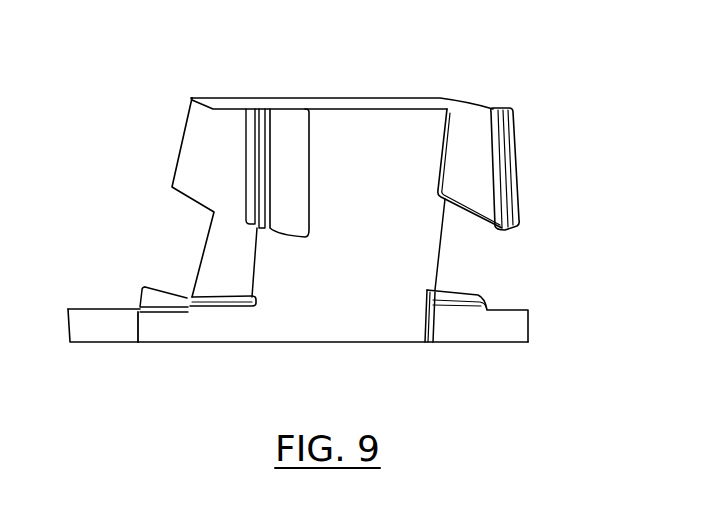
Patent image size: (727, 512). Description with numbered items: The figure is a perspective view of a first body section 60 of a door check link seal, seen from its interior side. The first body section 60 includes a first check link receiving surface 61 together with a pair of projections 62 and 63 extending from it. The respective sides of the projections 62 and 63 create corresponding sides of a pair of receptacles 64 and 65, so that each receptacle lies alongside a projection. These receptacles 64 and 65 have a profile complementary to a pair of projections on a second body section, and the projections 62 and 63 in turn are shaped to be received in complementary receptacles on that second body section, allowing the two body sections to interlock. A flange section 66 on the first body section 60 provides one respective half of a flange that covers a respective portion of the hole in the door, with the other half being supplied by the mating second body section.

The first body section 60 is at (256, 350).
The first check link receiving surface 61 is at (388, 138).
The projection 62 is at (284, 127).
The projection 63 is at (470, 133).
The receptacle 64 is at (273, 262).
The receptacle 65 is at (466, 249).
The flange section 66 is at (516, 343).